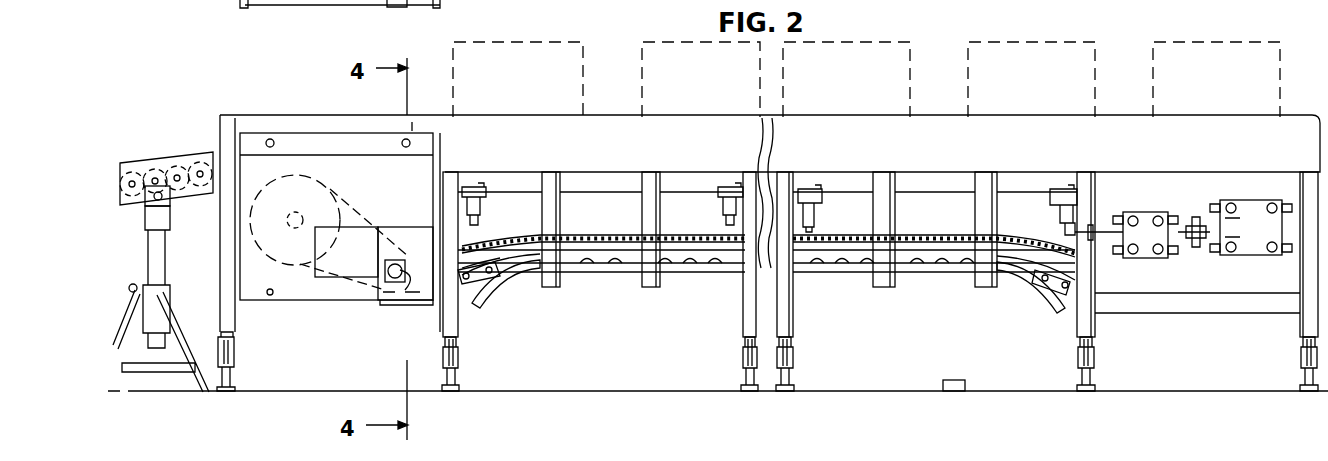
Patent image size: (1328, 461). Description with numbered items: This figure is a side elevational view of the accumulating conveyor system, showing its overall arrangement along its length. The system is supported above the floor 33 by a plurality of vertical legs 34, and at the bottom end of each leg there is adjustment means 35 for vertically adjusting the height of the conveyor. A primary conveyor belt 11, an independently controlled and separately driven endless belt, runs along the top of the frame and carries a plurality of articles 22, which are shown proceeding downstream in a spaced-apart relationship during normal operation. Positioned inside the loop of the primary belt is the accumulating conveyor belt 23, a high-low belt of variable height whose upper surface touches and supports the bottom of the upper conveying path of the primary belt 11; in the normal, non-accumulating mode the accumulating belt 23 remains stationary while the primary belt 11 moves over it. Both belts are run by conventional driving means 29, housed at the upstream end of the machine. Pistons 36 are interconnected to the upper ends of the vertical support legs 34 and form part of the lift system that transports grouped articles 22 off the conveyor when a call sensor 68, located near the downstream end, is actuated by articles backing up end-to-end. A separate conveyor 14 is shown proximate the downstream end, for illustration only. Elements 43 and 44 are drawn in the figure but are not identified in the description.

The primary conveyor belt 11 is at (618, 264).
The separate conveyor 14 is at (157, 166).
The articles 22 is at (522, 40).
The accumulating conveyor belt 23 is at (600, 235).
The driving means 29 is at (355, 192).
The floor 33 is at (860, 391).
The vertical legs 34 is at (780, 320).
The adjustment means 35 is at (745, 360).
The pistons 36 is at (816, 212).
The curved guide track 43 is at (549, 288).
The conveyor rail 44 is at (687, 268).
The call sensor 68 is at (953, 385).